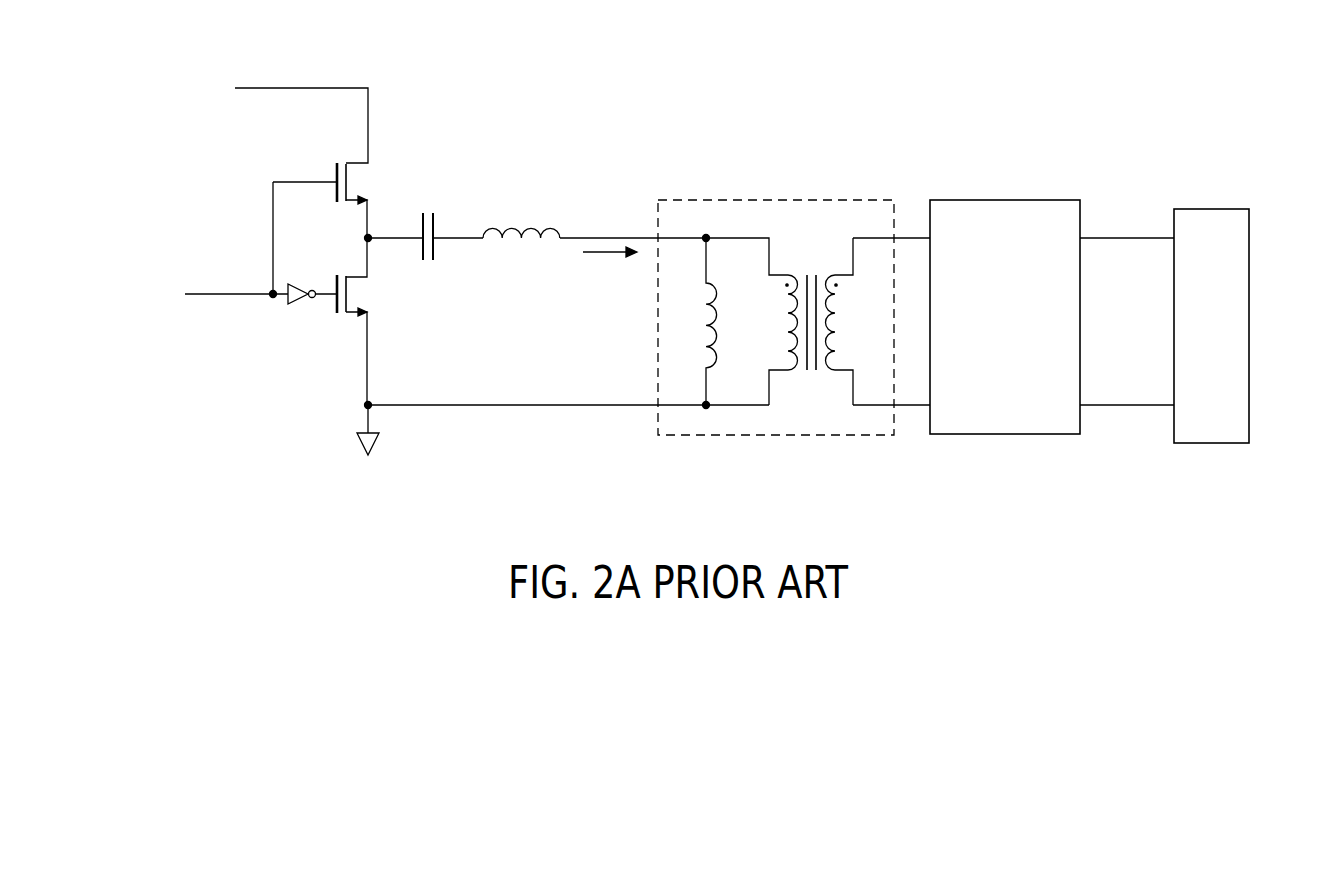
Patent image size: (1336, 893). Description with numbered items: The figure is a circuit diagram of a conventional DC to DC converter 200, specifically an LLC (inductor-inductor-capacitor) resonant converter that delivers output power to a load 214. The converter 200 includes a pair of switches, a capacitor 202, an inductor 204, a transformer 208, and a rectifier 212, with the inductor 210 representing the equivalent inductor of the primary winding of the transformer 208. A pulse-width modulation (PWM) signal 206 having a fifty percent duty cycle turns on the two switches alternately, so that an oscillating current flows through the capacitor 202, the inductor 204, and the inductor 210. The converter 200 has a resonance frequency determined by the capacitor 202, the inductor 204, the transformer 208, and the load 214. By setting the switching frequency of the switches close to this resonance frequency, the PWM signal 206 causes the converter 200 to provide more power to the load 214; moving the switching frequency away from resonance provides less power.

The DC to DC converter 200 is at (1042, 108).
The capacitor 202 is at (437, 224).
The inductor 204 is at (515, 226).
The pulse-width modulation (PWM) signal 206 is at (243, 292).
The transformer 208 is at (780, 200).
The inductor 210 is at (716, 327).
The rectifier 212 is at (1005, 317).
The load 214 is at (1211, 326).